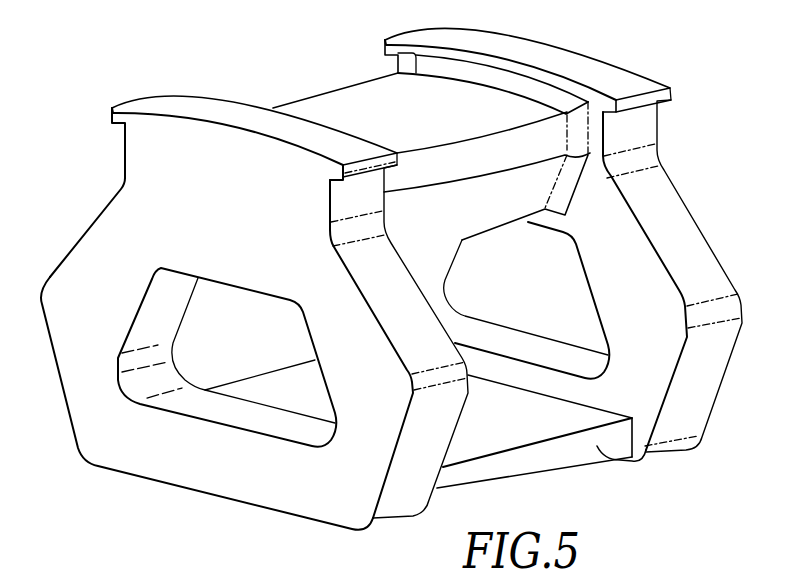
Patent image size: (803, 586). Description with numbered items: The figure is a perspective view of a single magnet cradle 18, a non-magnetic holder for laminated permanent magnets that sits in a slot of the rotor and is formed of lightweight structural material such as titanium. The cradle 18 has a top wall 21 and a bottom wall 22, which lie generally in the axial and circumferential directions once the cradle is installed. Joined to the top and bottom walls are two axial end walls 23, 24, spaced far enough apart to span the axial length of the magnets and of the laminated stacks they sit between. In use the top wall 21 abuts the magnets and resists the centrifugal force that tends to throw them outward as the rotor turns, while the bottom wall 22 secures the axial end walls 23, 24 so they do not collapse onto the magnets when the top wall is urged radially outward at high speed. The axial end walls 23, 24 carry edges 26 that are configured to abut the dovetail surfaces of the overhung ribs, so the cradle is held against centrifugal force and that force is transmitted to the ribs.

The cradle 18 is at (241, 212).
The top wall 21 is at (353, 98).
The bottom wall 22 is at (582, 417).
The axial end wall 23 is at (115, 213).
The axial end wall 24 is at (603, 265).
The edge 26 is at (377, 260).